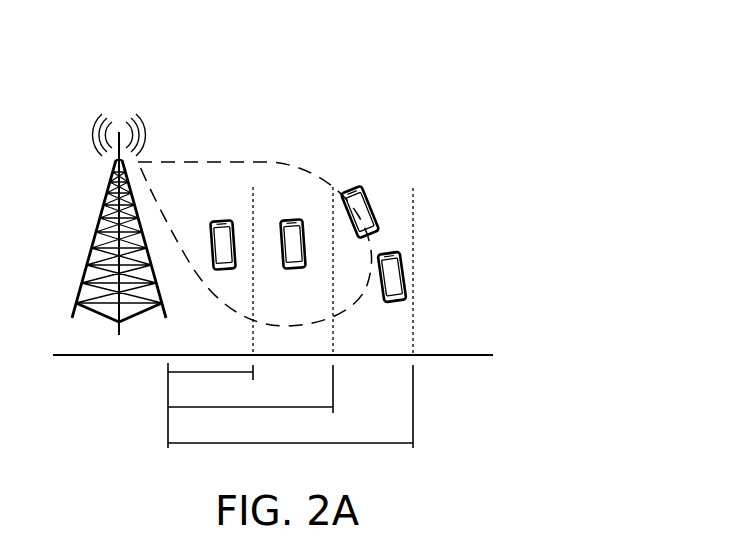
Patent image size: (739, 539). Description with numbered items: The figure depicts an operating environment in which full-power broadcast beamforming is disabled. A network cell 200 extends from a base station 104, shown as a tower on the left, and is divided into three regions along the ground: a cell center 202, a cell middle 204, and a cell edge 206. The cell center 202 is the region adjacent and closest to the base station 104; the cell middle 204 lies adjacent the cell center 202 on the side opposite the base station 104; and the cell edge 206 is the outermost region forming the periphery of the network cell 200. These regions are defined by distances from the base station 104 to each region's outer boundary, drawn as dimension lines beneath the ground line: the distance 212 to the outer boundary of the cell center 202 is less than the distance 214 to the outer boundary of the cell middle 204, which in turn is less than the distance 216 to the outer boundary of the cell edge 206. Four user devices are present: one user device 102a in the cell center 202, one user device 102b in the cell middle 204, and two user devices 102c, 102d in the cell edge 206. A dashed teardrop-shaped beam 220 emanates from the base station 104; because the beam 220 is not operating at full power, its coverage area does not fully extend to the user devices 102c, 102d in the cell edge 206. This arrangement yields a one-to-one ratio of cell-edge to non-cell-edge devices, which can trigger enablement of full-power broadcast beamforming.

The network cell 200 is at (184, 91).
The base station 104 is at (97, 258).
The beam 220 is at (214, 163).
The user device 102a is at (226, 220).
The user device 102b is at (300, 220).
The user device 102c is at (366, 188).
The user device 102d is at (399, 254).
The cell center 202 is at (226, 348).
The cell middle 204 is at (311, 348).
The cell edge 206 is at (388, 348).
The distance 212 is at (220, 374).
The distance 214 is at (260, 409).
The distance 216 is at (293, 445).